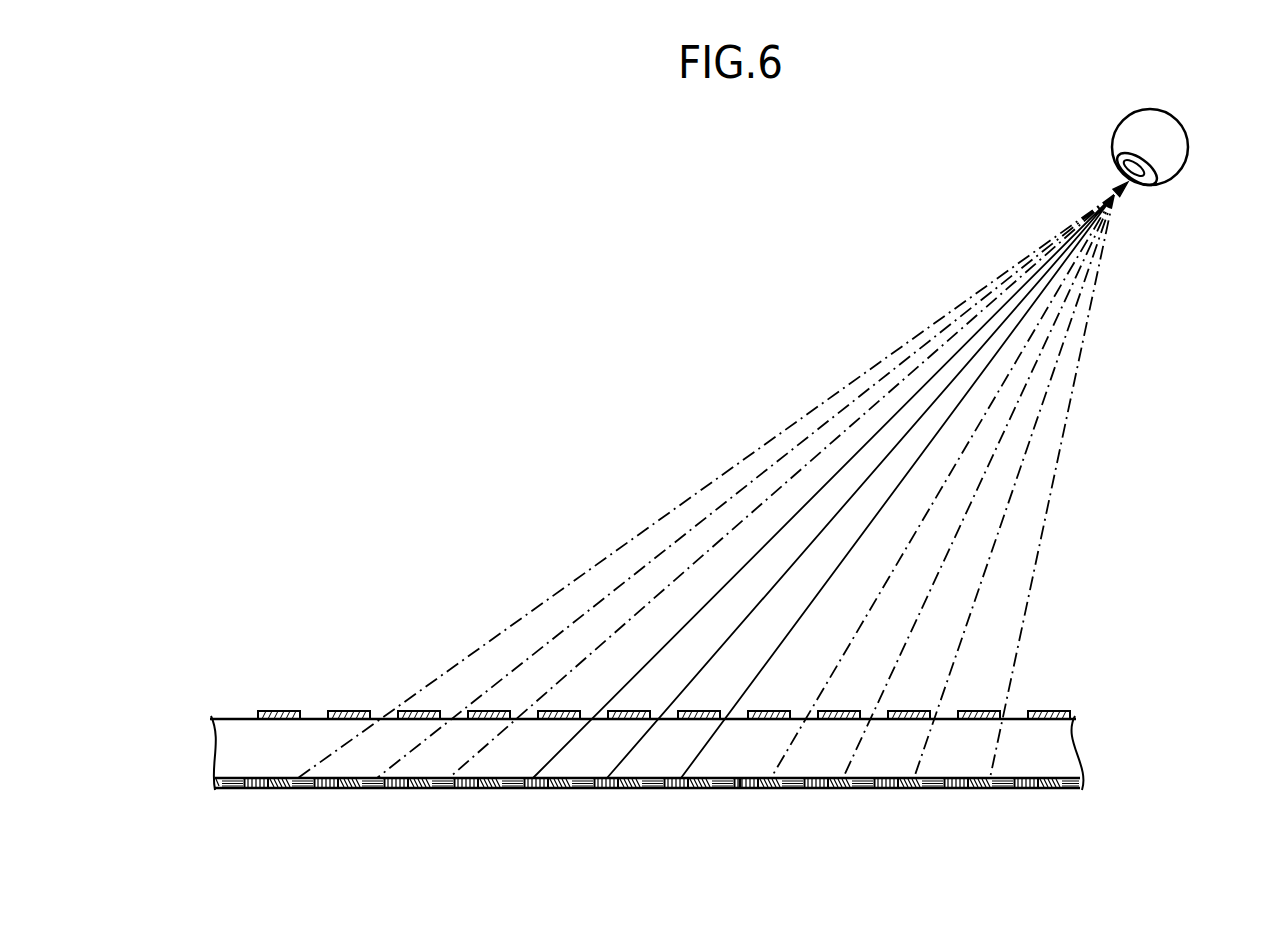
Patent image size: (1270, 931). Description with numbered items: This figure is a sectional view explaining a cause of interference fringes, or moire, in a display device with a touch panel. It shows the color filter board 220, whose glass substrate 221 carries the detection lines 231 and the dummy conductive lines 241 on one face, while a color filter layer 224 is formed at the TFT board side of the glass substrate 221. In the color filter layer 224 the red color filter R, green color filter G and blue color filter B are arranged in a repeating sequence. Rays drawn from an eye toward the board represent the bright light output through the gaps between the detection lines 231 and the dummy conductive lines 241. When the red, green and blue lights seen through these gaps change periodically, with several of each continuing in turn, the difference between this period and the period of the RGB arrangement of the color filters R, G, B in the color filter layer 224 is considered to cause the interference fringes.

The color filter board 220 is at (740, 762).
The glass substrate 221 is at (1067, 753).
The color filter layer 224 is at (1100, 782).
The detection lines 231 is at (493, 712).
The dummy conductive lines 241 is at (742, 722).
The blue color filter B is at (782, 430).
The red color filter R is at (957, 412).
The green color filter G is at (1058, 485).